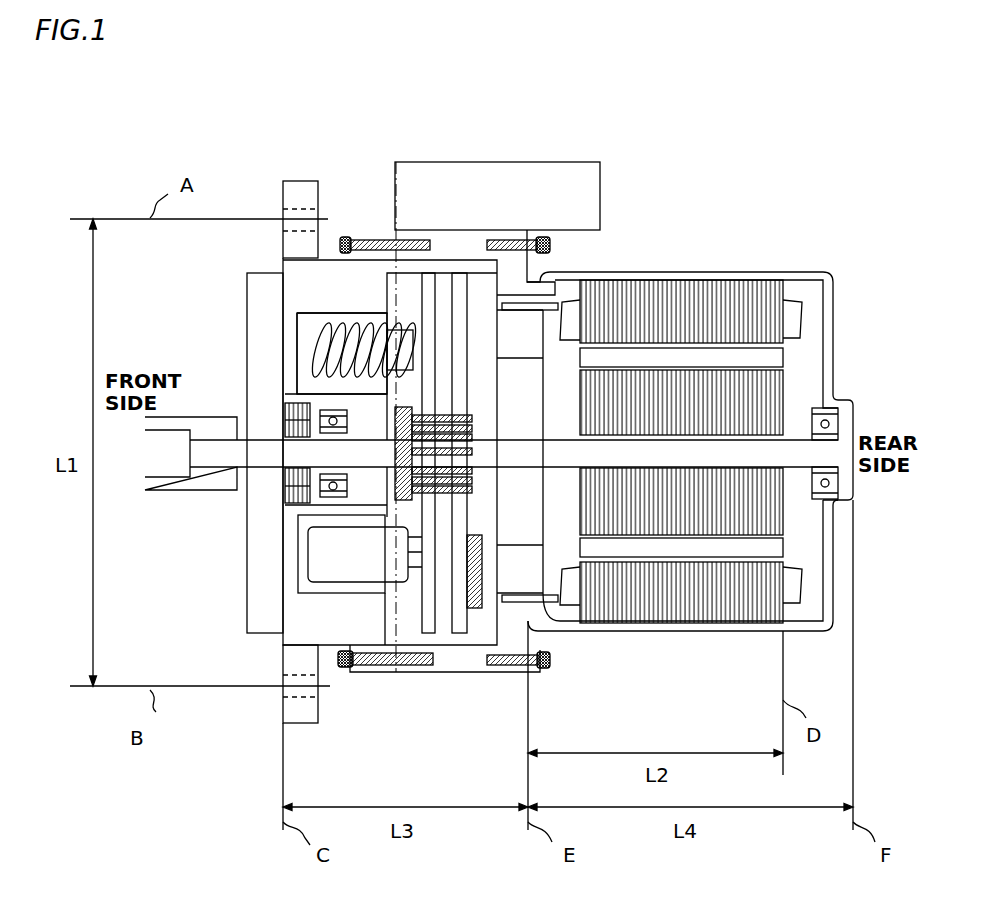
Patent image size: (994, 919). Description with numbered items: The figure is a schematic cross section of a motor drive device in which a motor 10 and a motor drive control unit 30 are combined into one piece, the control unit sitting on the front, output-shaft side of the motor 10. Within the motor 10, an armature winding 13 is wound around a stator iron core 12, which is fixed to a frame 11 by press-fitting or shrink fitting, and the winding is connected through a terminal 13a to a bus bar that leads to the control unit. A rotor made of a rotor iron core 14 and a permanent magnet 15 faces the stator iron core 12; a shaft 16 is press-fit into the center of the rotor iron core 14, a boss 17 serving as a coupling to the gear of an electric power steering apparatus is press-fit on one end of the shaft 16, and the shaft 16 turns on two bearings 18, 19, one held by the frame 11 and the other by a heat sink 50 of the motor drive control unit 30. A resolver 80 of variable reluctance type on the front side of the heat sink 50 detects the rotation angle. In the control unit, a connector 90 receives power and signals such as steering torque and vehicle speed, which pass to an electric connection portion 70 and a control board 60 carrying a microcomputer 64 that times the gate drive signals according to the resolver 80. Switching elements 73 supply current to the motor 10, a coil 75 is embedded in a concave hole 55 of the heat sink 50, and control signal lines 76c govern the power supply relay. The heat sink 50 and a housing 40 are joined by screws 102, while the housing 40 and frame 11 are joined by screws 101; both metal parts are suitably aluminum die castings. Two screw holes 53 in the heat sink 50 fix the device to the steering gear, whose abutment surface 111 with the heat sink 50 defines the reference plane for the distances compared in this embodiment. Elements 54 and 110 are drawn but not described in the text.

The motor 10 is at (860, 146).
The frame 11 is at (808, 270).
The stator iron core 12 is at (687, 287).
The armature winding 13 is at (788, 317).
The terminal 13a is at (532, 592).
The rotor iron core 14 is at (768, 388).
The permanent magnet 15 is at (777, 543).
The shaft 16 is at (213, 463).
The boss 17 is at (215, 418).
The bearing 18 is at (827, 488).
The bearing 19 is at (322, 412).
The motor drive control unit 30 is at (445, 903).
The housing 40 is at (440, 668).
The heat sink 50 is at (293, 290).
The screw hole 53 is at (300, 232).
The solenoid coil 54 is at (388, 498).
The concave hole 55 is at (308, 320).
The control board 60 is at (463, 627).
The microcomputer 64 is at (482, 606).
The electric connection portion 70 is at (422, 288).
The switching element 73 is at (397, 483).
The coil 75 is at (323, 353).
The control signal line 76c is at (472, 490).
The resolver 80 is at (287, 492).
The connector 90 is at (593, 200).
The screw 101 is at (495, 240).
The screw 102 is at (378, 238).
The heat radiating member 110 is at (393, 672).
The abutment surface 111 is at (284, 642).